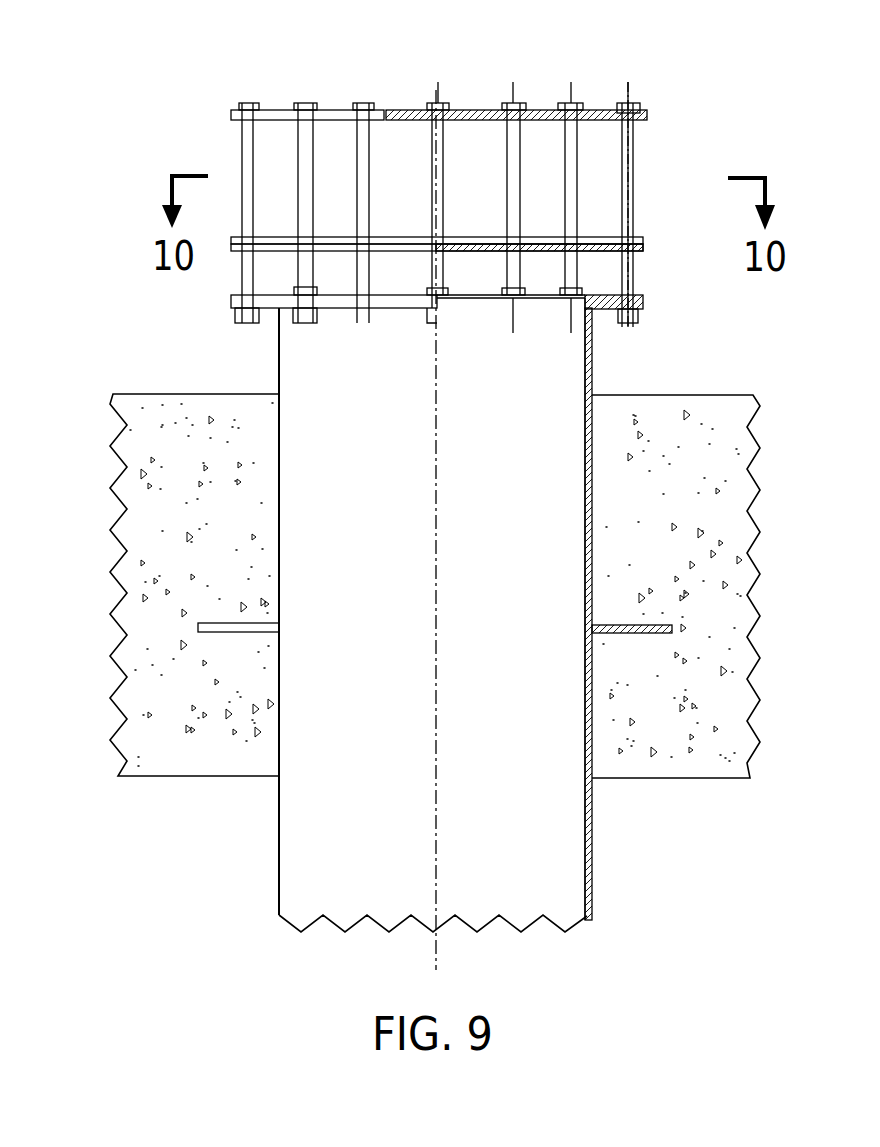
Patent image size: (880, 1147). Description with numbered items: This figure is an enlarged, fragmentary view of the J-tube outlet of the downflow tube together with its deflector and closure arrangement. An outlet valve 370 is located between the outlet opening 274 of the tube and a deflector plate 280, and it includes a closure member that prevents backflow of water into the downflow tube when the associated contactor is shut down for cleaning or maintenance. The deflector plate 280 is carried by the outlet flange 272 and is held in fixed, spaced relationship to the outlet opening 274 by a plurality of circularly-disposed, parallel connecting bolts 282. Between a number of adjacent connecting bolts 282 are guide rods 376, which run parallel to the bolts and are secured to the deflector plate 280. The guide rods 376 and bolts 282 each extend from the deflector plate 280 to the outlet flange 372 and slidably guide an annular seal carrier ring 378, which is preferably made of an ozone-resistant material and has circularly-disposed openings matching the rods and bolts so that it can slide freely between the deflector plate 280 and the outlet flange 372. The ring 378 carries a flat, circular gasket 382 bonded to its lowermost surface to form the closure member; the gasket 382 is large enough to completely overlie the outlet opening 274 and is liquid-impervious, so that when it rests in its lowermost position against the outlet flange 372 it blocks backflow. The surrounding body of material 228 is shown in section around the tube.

The outlet valve 370 is at (140, 153).
The guide rods 376 is at (305, 147).
The connecting bolts 282 is at (433, 147).
The deflector plate 280 is at (477, 112).
The seal carrier ring 378 is at (622, 237).
The gasket 382 is at (622, 251).
The outlet flange 372 is at (643, 303).
The outlet opening 274 is at (455, 295).
The outlet flange 272 is at (592, 715).
The concrete footing 228 is at (743, 495).